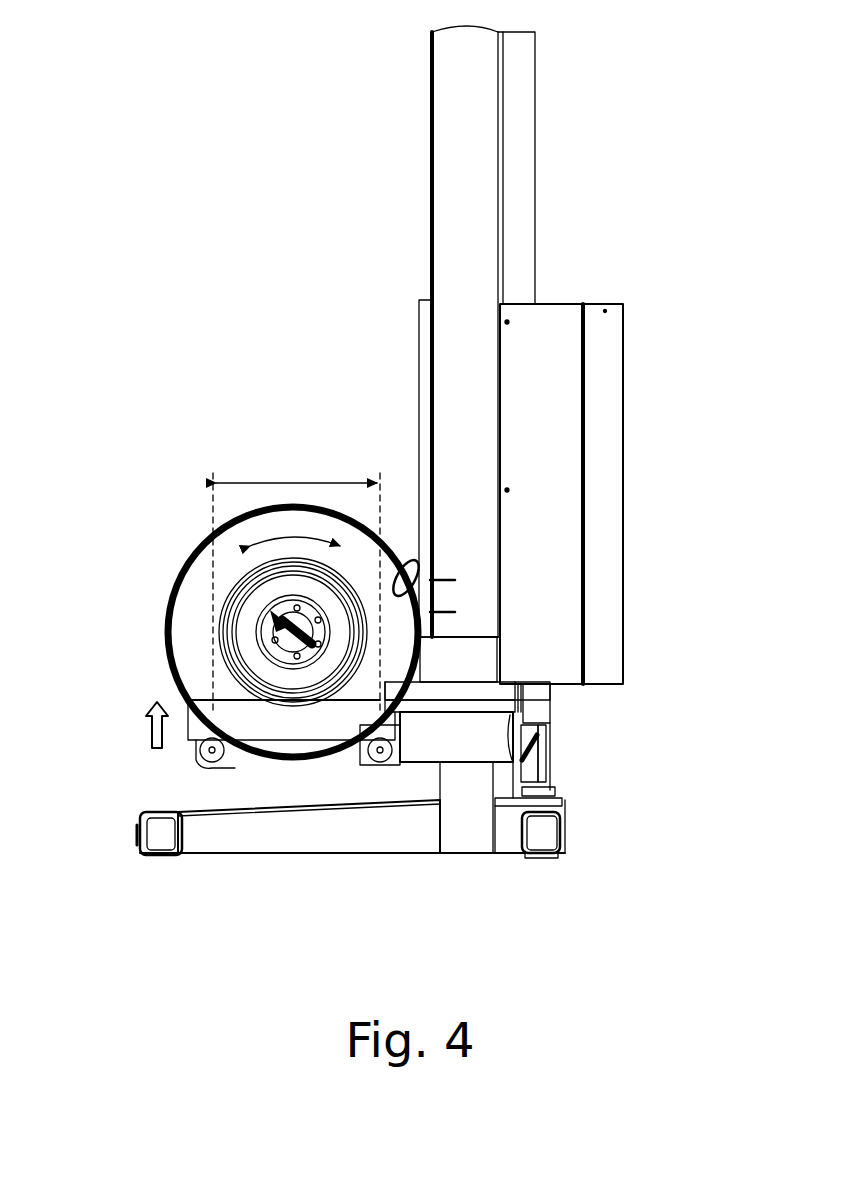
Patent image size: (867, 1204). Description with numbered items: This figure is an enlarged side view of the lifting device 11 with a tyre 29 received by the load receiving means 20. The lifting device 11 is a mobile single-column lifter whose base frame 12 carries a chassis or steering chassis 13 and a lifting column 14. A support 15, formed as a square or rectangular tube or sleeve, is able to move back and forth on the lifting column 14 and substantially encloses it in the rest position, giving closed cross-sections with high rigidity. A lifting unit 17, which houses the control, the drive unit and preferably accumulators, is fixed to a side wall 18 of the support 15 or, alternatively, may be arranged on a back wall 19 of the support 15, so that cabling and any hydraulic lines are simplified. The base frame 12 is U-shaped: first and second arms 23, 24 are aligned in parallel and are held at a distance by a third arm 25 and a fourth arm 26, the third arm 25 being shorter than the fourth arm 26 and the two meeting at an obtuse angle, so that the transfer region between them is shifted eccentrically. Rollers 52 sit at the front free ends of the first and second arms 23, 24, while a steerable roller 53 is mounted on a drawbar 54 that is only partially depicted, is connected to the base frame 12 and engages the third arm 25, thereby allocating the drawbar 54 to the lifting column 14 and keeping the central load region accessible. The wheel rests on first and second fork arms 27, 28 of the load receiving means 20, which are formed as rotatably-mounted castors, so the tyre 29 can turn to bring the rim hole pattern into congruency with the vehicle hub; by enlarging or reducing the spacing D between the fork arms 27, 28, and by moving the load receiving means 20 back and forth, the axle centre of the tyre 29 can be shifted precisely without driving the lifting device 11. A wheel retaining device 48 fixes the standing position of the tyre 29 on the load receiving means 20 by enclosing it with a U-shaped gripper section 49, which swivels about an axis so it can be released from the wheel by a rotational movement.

The lifting device 11 is at (274, 266).
The base frame 12 is at (600, 808).
The steering chassis 13 is at (600, 836).
The lifting column 14 is at (462, 855).
The support 15 is at (405, 186).
The lifting unit 17 is at (623, 466).
The side wall 18 is at (515, 248).
The back wall 19 is at (574, 103).
The load receiving means 20 is at (178, 782).
The first arm 23 is at (130, 850).
The second arm 24 is at (562, 864).
The third arm 25 is at (508, 832).
The fourth arm 26 is at (262, 842).
The first fork arm 27 is at (205, 752).
The second fork arm 28 is at (375, 768).
The tyre 29 is at (185, 556).
The wheel retaining device 48 is at (410, 523).
The gripper section 49 is at (403, 555).
The rollers 52 is at (157, 858).
The steerable roller 53 is at (547, 860).
The drawbar 54 is at (538, 707).